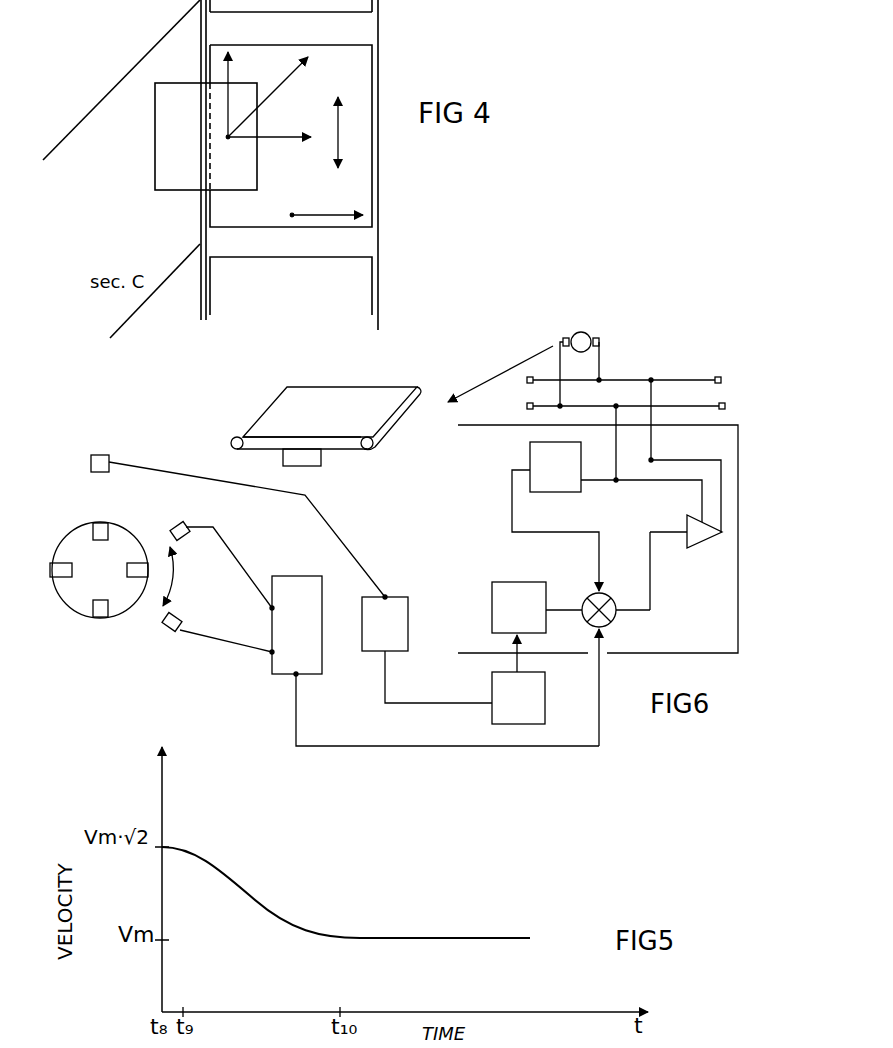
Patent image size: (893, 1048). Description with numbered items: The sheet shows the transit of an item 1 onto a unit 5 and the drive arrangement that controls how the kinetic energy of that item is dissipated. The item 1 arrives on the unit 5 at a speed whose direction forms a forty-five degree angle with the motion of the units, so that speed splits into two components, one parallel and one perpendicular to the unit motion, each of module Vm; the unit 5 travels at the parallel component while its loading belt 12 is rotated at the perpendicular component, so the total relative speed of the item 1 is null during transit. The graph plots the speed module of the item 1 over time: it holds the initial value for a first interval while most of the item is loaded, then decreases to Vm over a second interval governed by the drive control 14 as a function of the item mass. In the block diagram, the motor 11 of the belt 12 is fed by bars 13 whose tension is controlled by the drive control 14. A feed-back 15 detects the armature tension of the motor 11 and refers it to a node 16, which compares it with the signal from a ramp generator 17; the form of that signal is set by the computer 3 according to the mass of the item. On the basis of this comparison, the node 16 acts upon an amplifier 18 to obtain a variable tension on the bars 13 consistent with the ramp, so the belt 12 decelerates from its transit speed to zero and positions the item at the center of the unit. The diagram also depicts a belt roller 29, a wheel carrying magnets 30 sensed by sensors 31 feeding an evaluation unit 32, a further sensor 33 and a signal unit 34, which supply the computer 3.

In FIG. 4, the item 1 is at (160, 130).
In FIG. 4, the unit 5 is at (368, 118).
In FIG. 4, the belt 12 is at (360, 190).
In FIG. 6, the belt 12 is at (340, 449).
In FIG. 6, the motor 11 is at (588, 336).
In FIG. 6, the bars 13 is at (745, 358).
In FIG. 6, the drive control 14 is at (740, 525).
In FIG. 6, the feed-back 15 is at (607, 516).
In FIG. 6, the node 16 is at (612, 622).
In FIG. 6, the ramp generator 17 is at (521, 595).
In FIG. 6, the amplifier 18 is at (708, 538).
In FIG. 6, the computer 3 is at (447, 690).
In FIG. 6, the belt roller 29 is at (237, 437).
In FIG. 6, the magnets 30 is at (103, 527).
In FIG. 6, the sensors 31 is at (176, 525).
In FIG. 6, the sensor evaluation unit 32 is at (296, 626).
In FIG. 6, the sensor 33 is at (103, 455).
In FIG. 6, the signal unit 34 is at (385, 624).